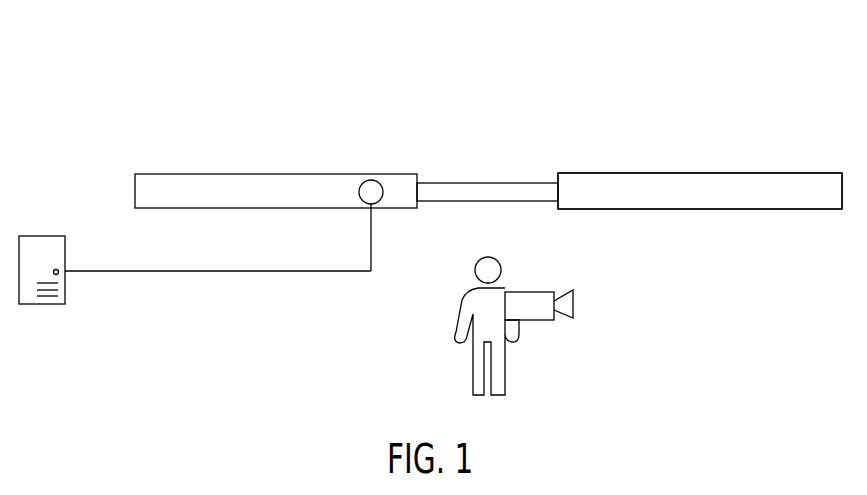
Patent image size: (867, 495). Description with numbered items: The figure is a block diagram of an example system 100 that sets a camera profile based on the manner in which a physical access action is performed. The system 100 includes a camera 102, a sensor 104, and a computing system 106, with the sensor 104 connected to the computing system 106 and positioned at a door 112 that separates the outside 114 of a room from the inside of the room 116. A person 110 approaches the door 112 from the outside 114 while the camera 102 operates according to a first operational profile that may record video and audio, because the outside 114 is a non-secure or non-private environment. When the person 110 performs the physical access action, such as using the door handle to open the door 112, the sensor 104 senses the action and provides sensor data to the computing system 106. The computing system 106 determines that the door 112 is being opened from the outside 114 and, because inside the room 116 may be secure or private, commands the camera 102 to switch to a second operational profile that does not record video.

The system 100 is at (104, 62).
The camera 102 is at (527, 292).
The sensor 104 is at (370, 181).
The computing system 106 is at (42, 236).
The person 110 is at (460, 320).
The door 112 is at (488, 183).
The outside 114 is at (778, 240).
The room 116 is at (778, 166).